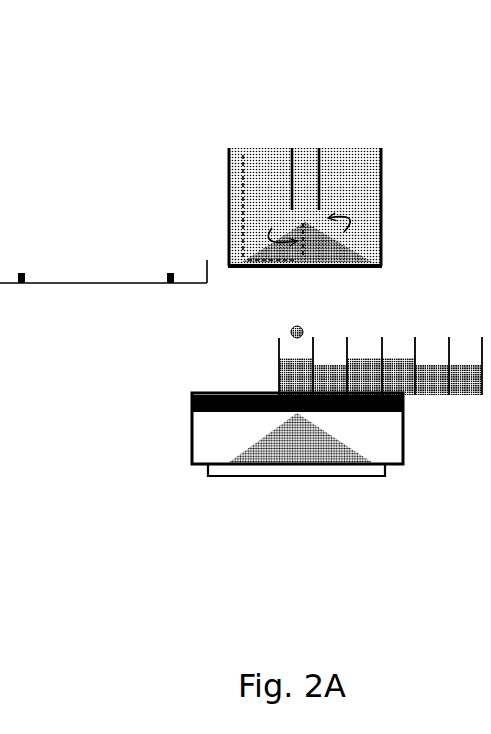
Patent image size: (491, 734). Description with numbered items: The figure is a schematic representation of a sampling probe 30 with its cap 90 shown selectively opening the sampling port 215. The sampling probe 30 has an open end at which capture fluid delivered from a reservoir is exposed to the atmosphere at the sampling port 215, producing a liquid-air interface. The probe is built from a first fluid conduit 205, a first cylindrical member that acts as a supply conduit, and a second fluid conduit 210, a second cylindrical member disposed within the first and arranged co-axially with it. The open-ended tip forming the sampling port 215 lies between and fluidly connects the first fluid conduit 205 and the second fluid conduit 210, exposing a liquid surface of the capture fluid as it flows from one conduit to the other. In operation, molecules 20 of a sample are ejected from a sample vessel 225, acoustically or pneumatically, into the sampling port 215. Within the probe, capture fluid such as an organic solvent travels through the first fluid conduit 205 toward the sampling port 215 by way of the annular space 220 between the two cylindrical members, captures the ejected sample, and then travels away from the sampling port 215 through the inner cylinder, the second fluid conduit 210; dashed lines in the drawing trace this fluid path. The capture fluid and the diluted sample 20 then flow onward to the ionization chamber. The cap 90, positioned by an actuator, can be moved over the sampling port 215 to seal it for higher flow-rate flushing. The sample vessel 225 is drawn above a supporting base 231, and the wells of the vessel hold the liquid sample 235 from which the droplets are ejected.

The molecules of sample 20 is at (286, 336).
The sampling probe 30 is at (186, 146).
The cap 90 is at (81, 259).
The first fluid conduit 205 is at (386, 189).
The second fluid conduit 210 is at (290, 173).
The sampling port 215 is at (367, 285).
The annular space 220 is at (355, 181).
The sample vessel 225 is at (271, 426).
The base stage 231 is at (184, 474).
The liquid in wells 235 is at (403, 380).